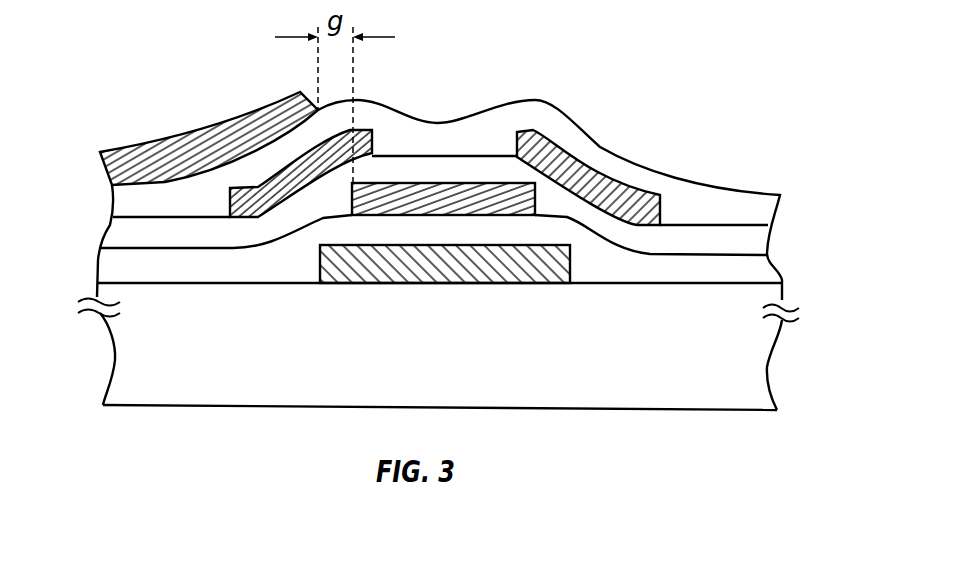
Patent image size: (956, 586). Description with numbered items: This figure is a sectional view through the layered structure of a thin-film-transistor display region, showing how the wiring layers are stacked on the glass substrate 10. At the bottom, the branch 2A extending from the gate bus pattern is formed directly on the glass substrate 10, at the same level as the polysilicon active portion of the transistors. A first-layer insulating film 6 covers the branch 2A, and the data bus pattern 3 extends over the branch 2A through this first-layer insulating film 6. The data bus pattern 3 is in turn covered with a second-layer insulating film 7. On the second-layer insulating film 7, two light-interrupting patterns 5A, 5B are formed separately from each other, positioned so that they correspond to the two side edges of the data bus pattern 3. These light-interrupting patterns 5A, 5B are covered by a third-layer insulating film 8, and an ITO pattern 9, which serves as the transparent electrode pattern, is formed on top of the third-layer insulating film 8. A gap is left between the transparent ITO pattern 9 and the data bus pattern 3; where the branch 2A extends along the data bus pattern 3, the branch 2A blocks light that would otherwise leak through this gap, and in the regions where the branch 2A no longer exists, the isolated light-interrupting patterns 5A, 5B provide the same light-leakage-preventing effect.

The ITO pattern 9 is at (265, 120).
The third-layer insulating film 8 is at (735, 200).
The light-interrupting pattern 5A is at (354, 140).
The light-interrupting pattern 5B is at (540, 137).
The data bus pattern 3 is at (438, 190).
The second-layer insulating film 7 is at (752, 242).
The first-layer insulating film 6 is at (657, 272).
The branch of the gate bus pattern 2A is at (573, 278).
The glass substrate 10 is at (750, 355).